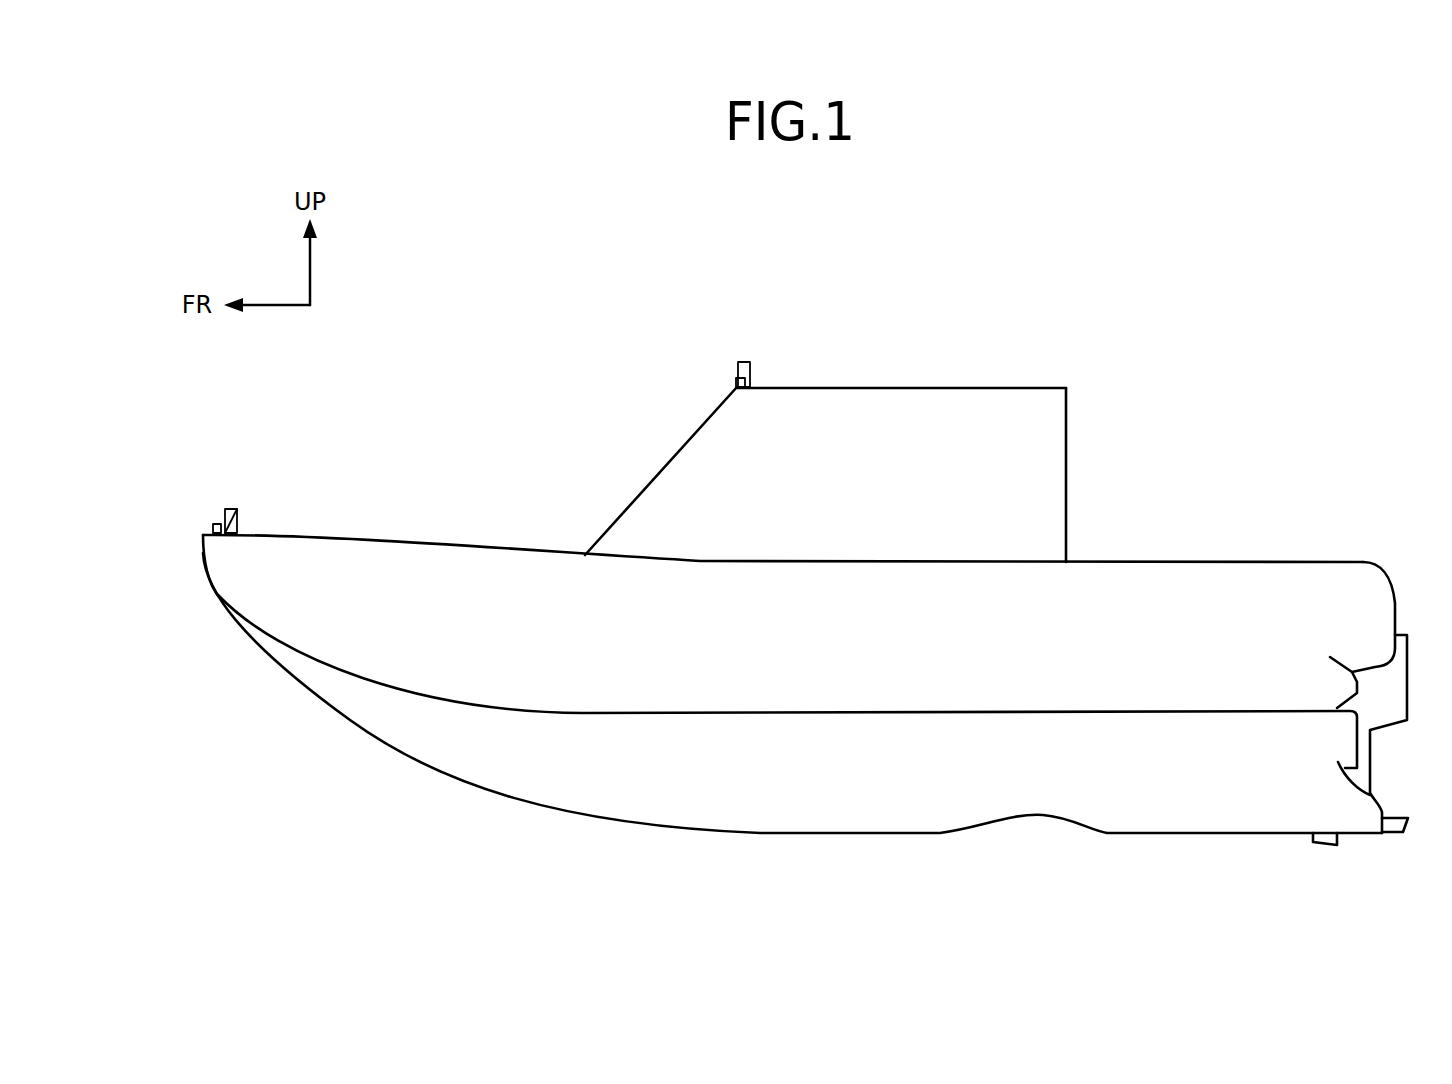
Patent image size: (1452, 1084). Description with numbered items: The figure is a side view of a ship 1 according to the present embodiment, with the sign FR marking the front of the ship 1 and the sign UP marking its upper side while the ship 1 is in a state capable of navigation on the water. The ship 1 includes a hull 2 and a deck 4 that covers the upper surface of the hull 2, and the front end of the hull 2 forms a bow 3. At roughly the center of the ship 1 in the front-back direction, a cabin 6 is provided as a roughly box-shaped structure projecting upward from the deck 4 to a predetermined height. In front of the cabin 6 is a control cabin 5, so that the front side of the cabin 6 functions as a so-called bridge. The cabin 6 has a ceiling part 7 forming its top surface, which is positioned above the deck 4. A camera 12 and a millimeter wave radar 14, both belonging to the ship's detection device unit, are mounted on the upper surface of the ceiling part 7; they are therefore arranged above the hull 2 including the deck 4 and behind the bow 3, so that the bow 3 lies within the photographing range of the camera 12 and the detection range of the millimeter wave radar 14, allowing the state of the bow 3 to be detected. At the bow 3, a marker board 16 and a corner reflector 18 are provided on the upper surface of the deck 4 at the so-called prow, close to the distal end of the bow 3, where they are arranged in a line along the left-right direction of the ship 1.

The ship 1 is at (1361, 349).
The hull 2 is at (908, 800).
The bow 3 is at (247, 558).
The deck 4 is at (1206, 562).
The control cabin 5 is at (680, 482).
The cabin 6 is at (1068, 388).
The ceiling part 7 is at (925, 388).
The camera 12 is at (751, 363).
The millimeter wave radar 14 is at (736, 380).
The marker board 16 is at (228, 510).
The corner reflector 18 is at (215, 525).